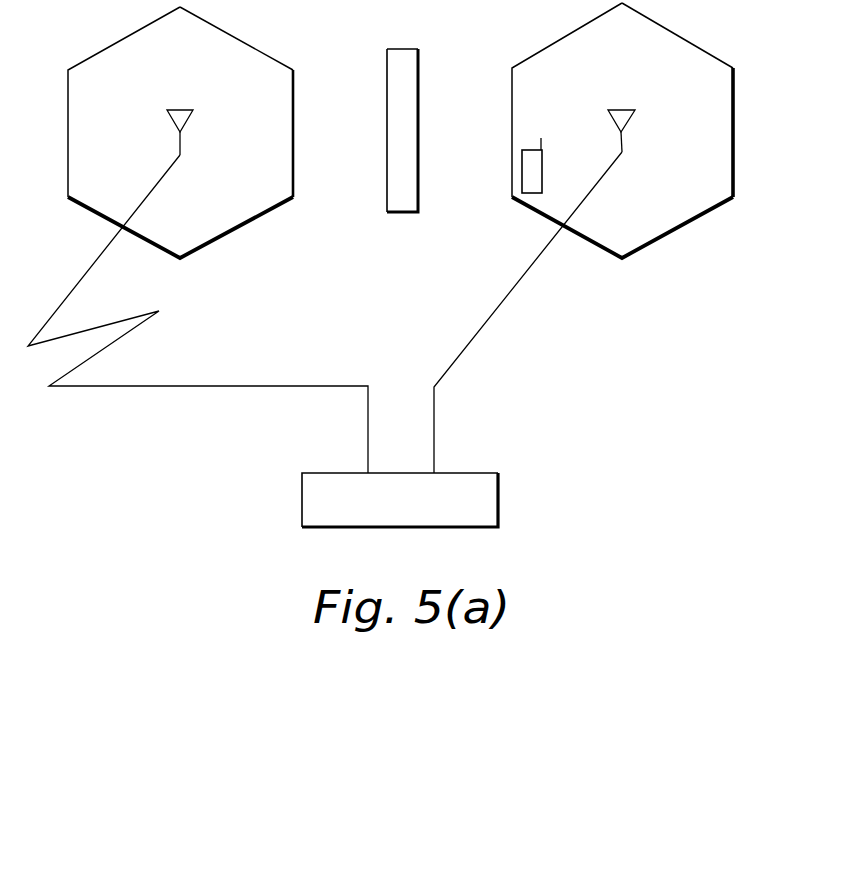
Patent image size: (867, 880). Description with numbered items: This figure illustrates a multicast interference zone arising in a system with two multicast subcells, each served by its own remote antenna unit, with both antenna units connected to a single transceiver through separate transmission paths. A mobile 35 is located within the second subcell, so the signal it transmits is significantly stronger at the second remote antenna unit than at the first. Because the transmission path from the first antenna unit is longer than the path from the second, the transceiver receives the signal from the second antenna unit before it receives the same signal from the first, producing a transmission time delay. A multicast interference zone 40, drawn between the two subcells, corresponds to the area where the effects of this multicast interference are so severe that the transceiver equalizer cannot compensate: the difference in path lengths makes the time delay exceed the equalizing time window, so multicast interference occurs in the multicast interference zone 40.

The mobile 35 is at (520, 173).
The multicast interference zone 40 is at (401, 49).